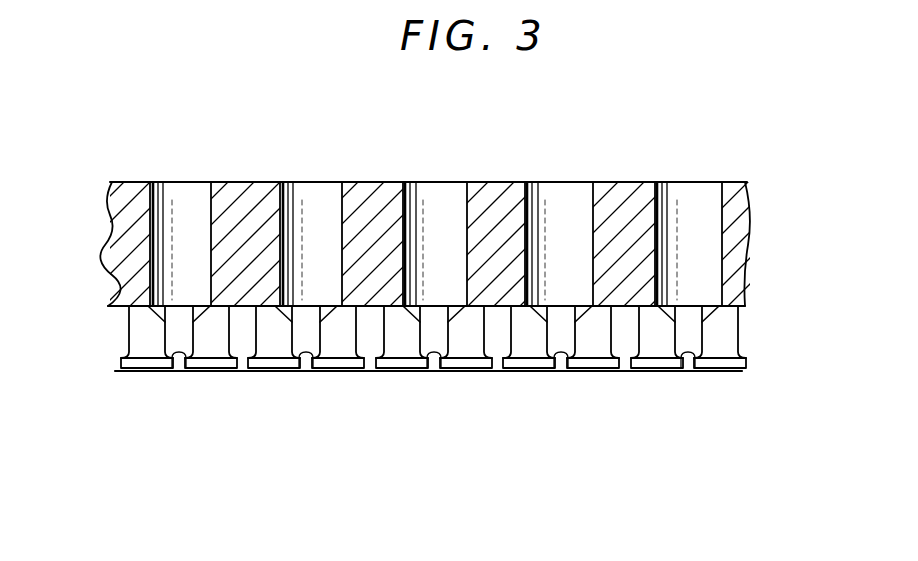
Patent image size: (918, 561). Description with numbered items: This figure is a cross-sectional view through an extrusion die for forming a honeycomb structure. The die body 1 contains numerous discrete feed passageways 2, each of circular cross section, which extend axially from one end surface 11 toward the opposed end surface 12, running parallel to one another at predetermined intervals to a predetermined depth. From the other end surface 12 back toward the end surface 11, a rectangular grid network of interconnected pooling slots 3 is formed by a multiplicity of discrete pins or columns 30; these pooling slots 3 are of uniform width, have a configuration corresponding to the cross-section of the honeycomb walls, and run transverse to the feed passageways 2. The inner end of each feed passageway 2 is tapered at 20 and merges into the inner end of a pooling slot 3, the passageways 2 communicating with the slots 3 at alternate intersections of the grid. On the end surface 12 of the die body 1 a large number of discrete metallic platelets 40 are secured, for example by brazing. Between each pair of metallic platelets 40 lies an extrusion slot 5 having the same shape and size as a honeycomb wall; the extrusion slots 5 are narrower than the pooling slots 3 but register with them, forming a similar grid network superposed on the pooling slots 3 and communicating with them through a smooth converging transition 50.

The die body 1 is at (755, 237).
The feed passageways 2 is at (318, 193).
The pooling slots 3 is at (563, 340).
The extrusion slot 5 is at (370, 379).
The end surface 11 is at (507, 187).
The end surface 12 is at (665, 360).
The tapered inner end 20 is at (332, 307).
The pins or columns 30 is at (468, 340).
The metallic platelets 40 is at (643, 375).
The converging transition 50 is at (118, 358).